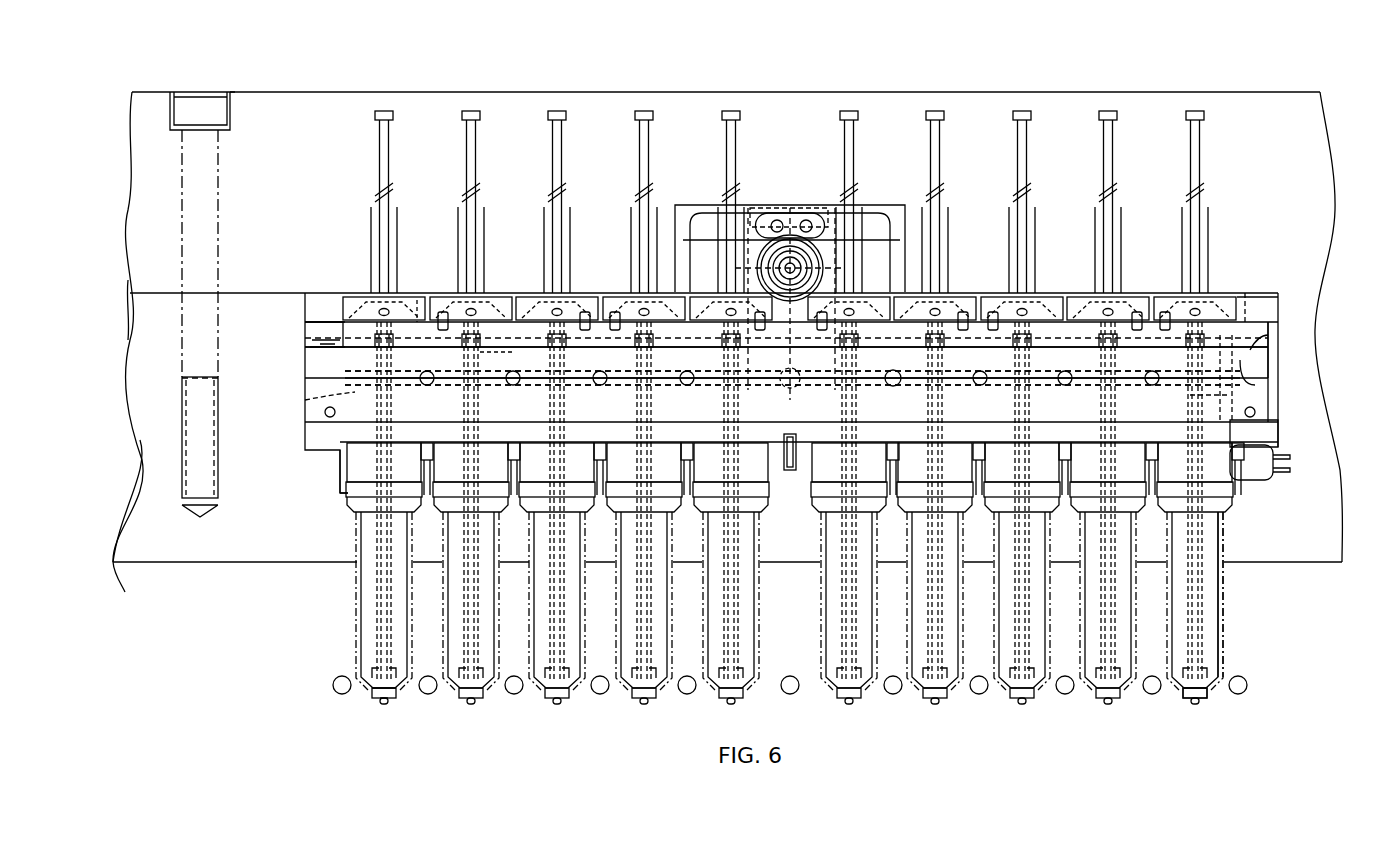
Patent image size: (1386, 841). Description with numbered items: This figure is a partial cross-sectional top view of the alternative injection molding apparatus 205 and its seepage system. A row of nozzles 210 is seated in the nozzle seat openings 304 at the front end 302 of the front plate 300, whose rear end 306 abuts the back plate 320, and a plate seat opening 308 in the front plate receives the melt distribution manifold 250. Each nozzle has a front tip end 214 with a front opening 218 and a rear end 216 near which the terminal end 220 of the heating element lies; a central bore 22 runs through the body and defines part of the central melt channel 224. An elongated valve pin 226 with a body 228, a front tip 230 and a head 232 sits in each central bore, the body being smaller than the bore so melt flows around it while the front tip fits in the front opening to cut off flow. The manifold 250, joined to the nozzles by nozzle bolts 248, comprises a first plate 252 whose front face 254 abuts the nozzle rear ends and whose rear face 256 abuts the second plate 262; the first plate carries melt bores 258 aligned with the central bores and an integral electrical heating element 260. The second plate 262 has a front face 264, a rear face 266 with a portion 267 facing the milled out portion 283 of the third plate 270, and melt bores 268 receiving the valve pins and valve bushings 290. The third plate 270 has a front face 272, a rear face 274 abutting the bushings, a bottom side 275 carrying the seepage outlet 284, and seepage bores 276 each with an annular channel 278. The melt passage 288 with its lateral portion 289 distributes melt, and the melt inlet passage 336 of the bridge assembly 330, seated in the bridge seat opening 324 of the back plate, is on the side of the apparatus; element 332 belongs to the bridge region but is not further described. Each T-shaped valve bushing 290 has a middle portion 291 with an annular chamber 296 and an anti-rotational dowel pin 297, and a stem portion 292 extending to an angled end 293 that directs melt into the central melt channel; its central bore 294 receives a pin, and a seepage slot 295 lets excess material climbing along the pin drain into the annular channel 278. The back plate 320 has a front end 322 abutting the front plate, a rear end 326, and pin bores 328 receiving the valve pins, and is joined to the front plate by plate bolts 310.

The central bore 22 is at (1234, 528).
The injection molding apparatus 205 is at (1185, 762).
The nozzle 210 is at (353, 628).
The front tip end 214 is at (398, 692).
The rear end 216 is at (352, 456).
The front opening 218 is at (378, 705).
The terminal end 220 is at (1252, 480).
The central melt channel 224 is at (1216, 640).
The valve pin 226 is at (372, 146).
The valve pin body 228 is at (350, 425).
The front tip 230 is at (1205, 706).
The head 232 is at (644, 110).
The nozzle bolts 248 is at (1250, 318).
The melt distribution manifold 250 is at (306, 377).
The first plate 252 is at (1276, 462).
The front face 254 is at (1218, 448).
The rear face 256 is at (1280, 442).
The melt bores 258 is at (330, 397).
The integral electrical heating element 260 is at (324, 417).
The second plate 262 is at (1262, 412).
The front face 264 is at (1256, 413).
The rear face 266 is at (1262, 385).
The portion of rear face 267 is at (352, 348).
The melt bores 268 is at (1192, 399).
The third plate 270 is at (340, 322).
The front face 272 is at (1257, 352).
The rear face 274 is at (1242, 306).
The bottom side 275 is at (332, 348).
The seepage bores 276 is at (417, 298).
The annular channel 278 is at (560, 384).
The milled out portion 283 is at (907, 340).
The seepage outlet 284 is at (315, 322).
The melt passage 288 is at (1054, 366).
The lateral portion 289 is at (1000, 373).
The valve bushing 290 is at (1232, 288).
The middle portion 291 is at (378, 300).
The stem portion 292 is at (1270, 330).
The end 293 is at (738, 383).
The central bore 294 is at (496, 352).
The seepage slot 295 is at (580, 320).
The annular chamber 296 is at (1200, 308).
The anti-rotational dowel pin 297 is at (444, 310).
The front plate 300 is at (145, 453).
The front end 302 is at (128, 572).
The nozzle seat openings 304 is at (1224, 585).
The rear end 306 is at (132, 300).
The plate seat opening 308 is at (1275, 345).
The plate bolts 310 is at (203, 100).
The back plate 320 is at (140, 97).
The front end 322 is at (147, 283).
The bridge seat opening 324 is at (692, 213).
The rear end 326 is at (303, 92).
The pin bores 328 is at (485, 232).
The bridge assembly 330 is at (816, 205).
The drive wheel 332 is at (812, 222).
The melt inlet passage 336 is at (790, 270).